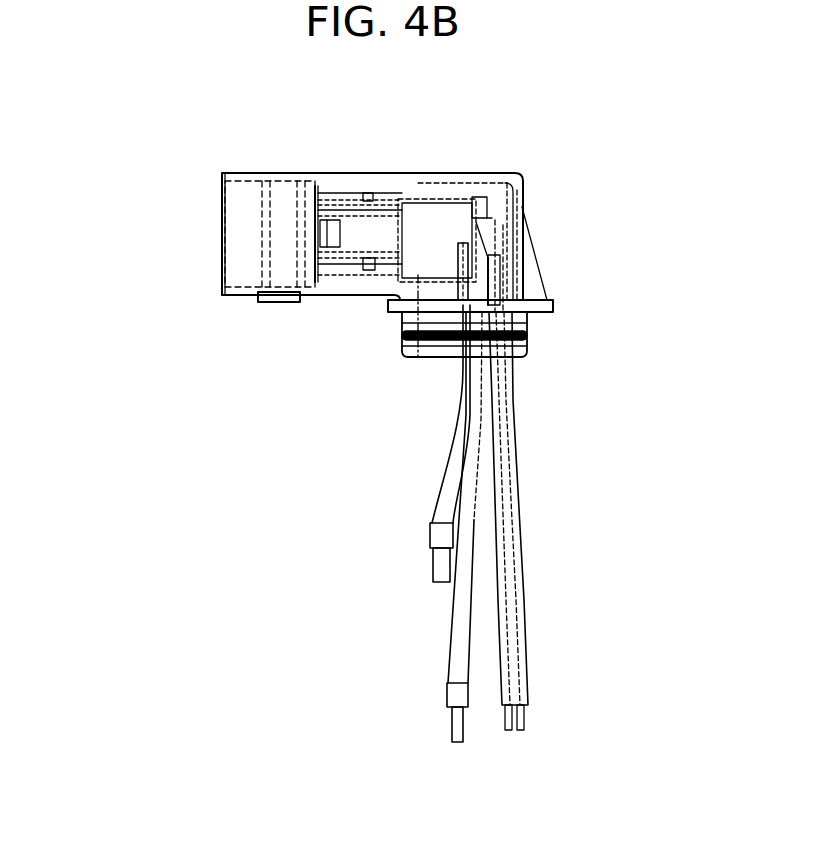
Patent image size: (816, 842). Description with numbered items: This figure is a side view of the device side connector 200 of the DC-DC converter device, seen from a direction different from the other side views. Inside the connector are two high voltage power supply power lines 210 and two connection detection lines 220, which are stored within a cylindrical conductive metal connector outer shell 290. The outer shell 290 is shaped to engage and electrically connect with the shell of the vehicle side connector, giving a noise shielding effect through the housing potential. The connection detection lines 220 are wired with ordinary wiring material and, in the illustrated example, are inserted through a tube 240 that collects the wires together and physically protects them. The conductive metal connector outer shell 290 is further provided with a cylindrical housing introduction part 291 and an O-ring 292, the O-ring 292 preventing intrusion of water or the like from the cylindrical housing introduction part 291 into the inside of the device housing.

The device side connector 200 is at (148, 243).
The high voltage power supply power line 210 is at (438, 567).
The connection detection line 220 is at (495, 258).
The tube 240 is at (510, 582).
The conductive metal connector outer shell 290 is at (368, 280).
The cylindrical housing introduction part 291 is at (381, 313).
The O-ring 292 is at (528, 337).